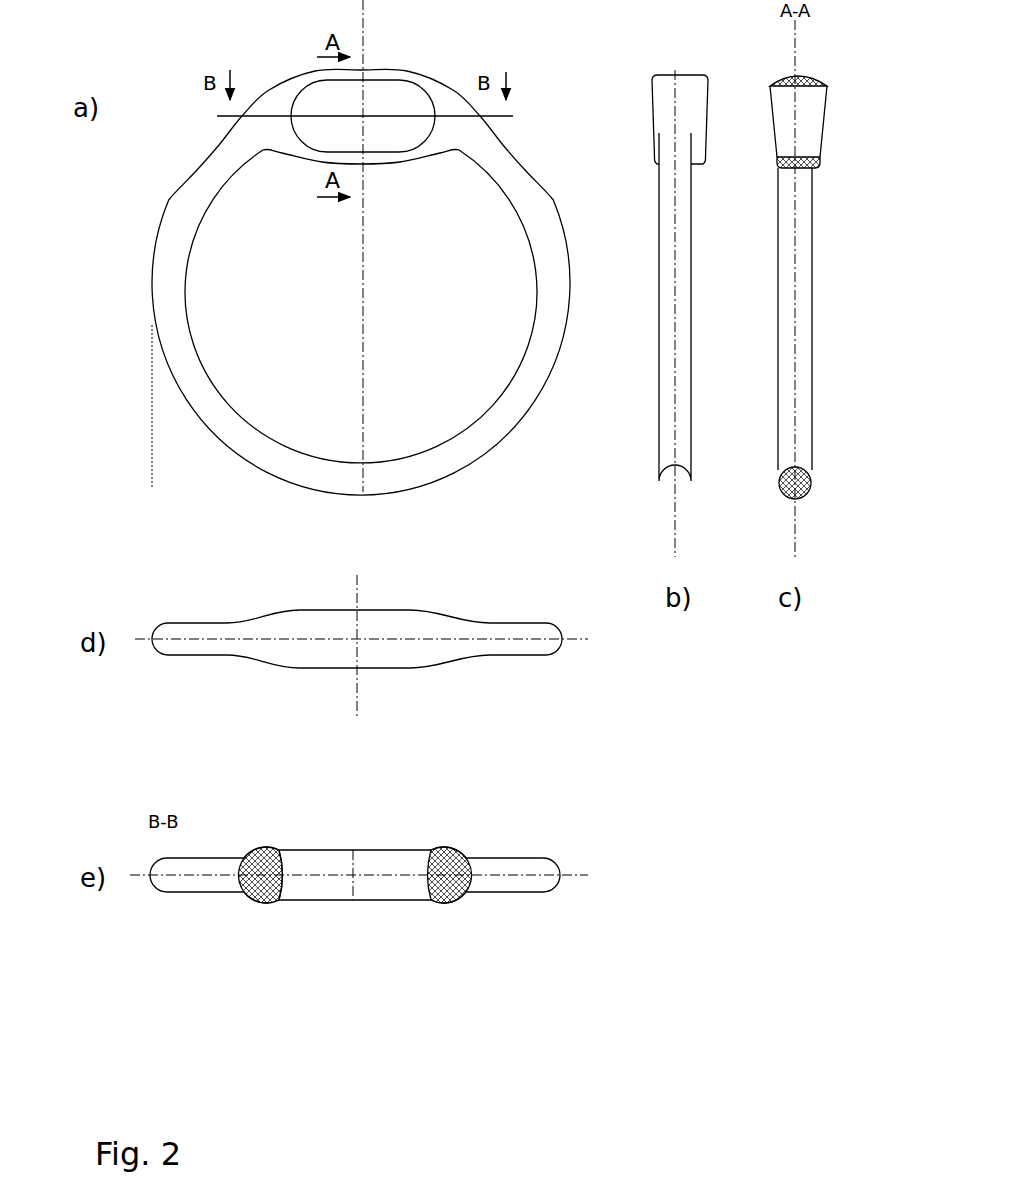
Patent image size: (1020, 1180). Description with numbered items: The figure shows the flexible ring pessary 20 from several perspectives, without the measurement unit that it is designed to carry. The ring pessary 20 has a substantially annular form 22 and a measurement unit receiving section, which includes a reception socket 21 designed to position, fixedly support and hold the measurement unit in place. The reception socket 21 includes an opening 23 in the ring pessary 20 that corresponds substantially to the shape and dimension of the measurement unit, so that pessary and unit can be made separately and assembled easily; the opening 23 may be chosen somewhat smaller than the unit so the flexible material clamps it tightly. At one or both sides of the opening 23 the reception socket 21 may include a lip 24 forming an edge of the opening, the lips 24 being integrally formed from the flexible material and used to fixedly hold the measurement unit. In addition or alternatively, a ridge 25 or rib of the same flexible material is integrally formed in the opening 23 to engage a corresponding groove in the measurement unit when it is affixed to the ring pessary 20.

The ring pessary 20 is at (142, 192).
The reception socket 21 is at (442, 104).
The annular form 22 is at (463, 445).
The opening 23 is at (313, 108).
The lip 24 is at (280, 851).
The ridge 25 is at (283, 879).